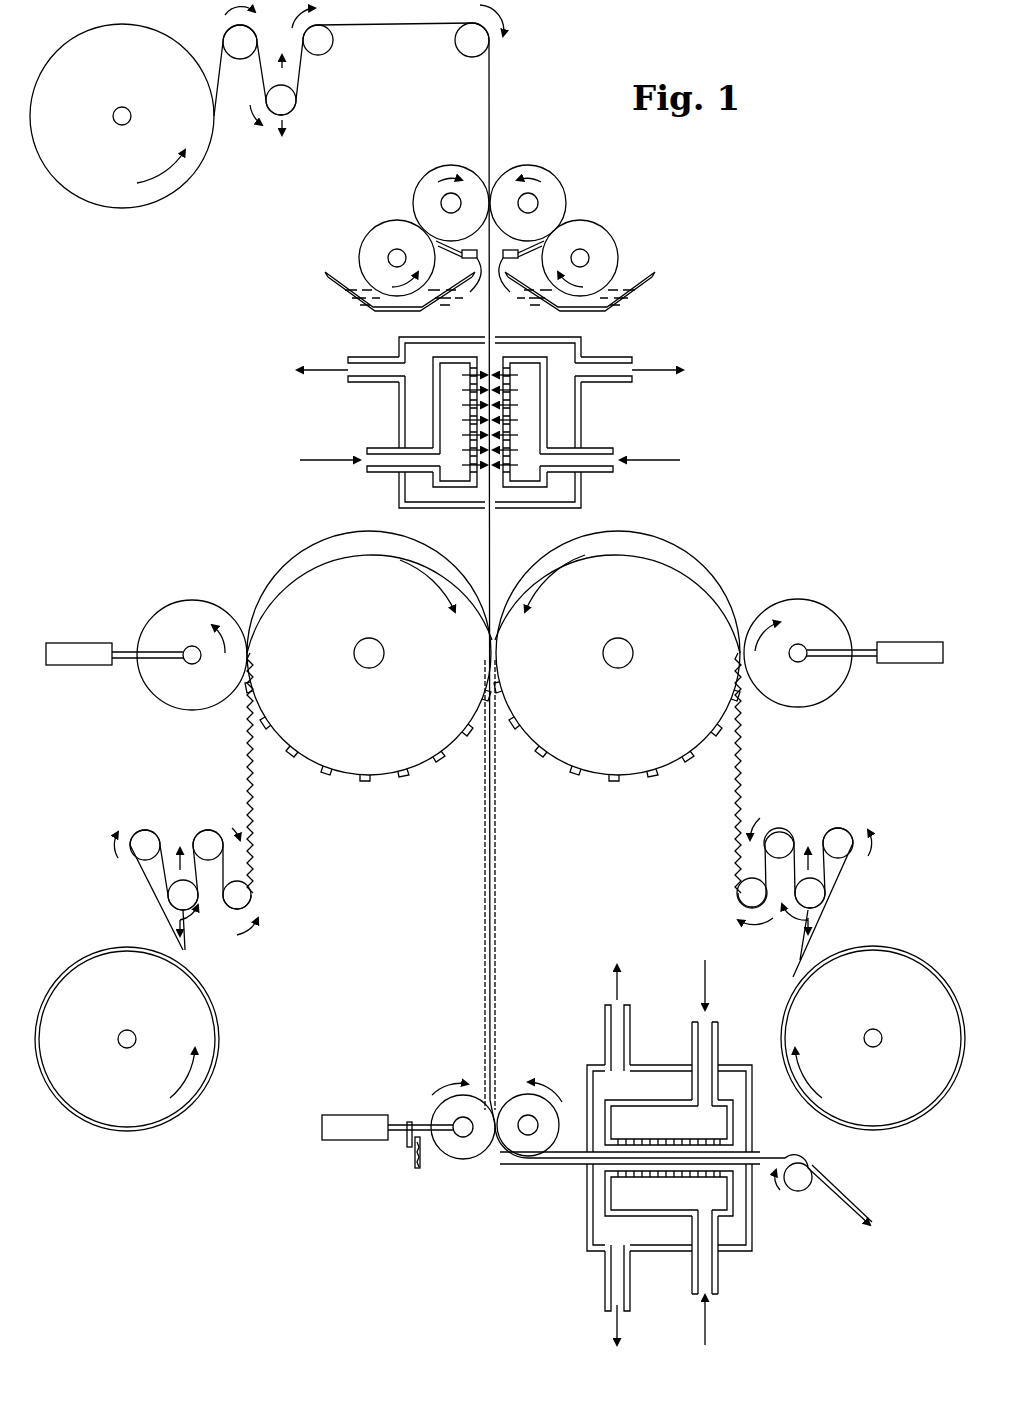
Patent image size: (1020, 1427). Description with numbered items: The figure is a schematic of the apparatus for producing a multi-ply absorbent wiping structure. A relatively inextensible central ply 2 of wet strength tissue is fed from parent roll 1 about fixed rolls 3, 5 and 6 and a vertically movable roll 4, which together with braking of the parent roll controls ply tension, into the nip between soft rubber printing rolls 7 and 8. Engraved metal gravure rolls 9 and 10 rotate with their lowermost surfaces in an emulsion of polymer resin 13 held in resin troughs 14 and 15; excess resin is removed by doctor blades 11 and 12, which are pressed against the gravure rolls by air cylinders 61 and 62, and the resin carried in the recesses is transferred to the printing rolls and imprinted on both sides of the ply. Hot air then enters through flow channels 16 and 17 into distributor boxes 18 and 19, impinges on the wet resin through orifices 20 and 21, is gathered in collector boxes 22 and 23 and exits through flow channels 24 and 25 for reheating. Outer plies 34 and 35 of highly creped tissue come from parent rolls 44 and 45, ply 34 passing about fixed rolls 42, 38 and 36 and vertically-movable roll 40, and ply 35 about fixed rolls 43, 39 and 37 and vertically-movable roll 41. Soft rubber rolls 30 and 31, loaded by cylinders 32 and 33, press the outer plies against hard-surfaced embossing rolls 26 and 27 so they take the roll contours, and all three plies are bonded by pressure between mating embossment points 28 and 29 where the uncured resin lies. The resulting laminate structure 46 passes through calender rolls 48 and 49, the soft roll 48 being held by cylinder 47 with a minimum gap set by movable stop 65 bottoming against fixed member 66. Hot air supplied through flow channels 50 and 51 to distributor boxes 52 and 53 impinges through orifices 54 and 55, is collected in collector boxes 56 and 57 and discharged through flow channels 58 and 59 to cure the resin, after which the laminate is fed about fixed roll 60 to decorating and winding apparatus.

The parent roll 1 is at (142, 35).
The central ply 2 is at (388, 18).
The fixed roll 3 is at (245, 50).
The vertically movable roll 4 is at (290, 102).
The fixed roll 5 is at (326, 45).
The fixed roll 6 is at (463, 48).
The rubber printing roll 7 is at (428, 182).
The rubber printing roll 8 is at (550, 185).
The engraved metal gravure roll 9 is at (388, 228).
The engraved metal gravure roll 10 is at (592, 232).
The doctor blade 11 is at (470, 238).
The doctor blade 12 is at (520, 222).
The polymer resin 13 is at (350, 278).
The resin trough 14 is at (320, 292).
The resin trough 15 is at (660, 292).
The flow channel 16 is at (375, 472).
The flow channel 17 is at (605, 472).
The distributor box 18 is at (432, 392).
The distributor box 19 is at (548, 392).
The orifices 20 is at (468, 420).
The orifices 21 is at (512, 420).
The collector box 22 is at (472, 512).
The collector box 23 is at (508, 512).
The flow channel 24 is at (372, 355).
The flow channel 25 is at (608, 355).
The embossing roll 26 is at (380, 755).
The embossing roll 27 is at (585, 755).
The embossment points 28 is at (335, 778).
The embossment points 29 is at (652, 778).
The rubber roll 30 is at (180, 606).
The rubber roll 31 is at (795, 604).
The cylinder 32 is at (82, 642).
The cylinder 33 is at (900, 642).
The outer ply 34 is at (254, 820).
The outer ply 35 is at (732, 815).
The fixed roll 36 is at (240, 893).
The fixed roll 37 is at (745, 894).
The fixed roll 38 is at (206, 830).
The fixed roll 39 is at (778, 830).
The vertically-movable roll 40 is at (175, 896).
The vertically-movable roll 41 is at (815, 895).
The fixed roll 42 is at (145, 830).
The fixed roll 43 is at (836, 830).
The parent roll 44 is at (106, 968).
The parent roll 45 is at (878, 955).
The laminate structure 46 is at (505, 885).
The cylinder 47 is at (348, 1114).
The calender roll 48 is at (440, 1112).
The calender roll 49 is at (512, 1108).
The flow channel 50 is at (718, 1285).
The flow channel 51 is at (718, 1030).
The distributor box 52 is at (630, 1216).
The distributor box 53 is at (630, 1100).
The orifices 54 is at (665, 1180).
The orifices 55 is at (655, 1136).
The collector box 56 is at (752, 1235).
The collector box 57 is at (752, 1115).
The flow channel 58 is at (630, 1300).
The flow channel 59 is at (630, 1015).
The fixed roll 60 is at (802, 1185).
The air cylinder 61 is at (466, 296).
The air cylinder 62 is at (514, 296).
The movable stop 65 is at (403, 1142).
The fixed member 66 is at (410, 1165).